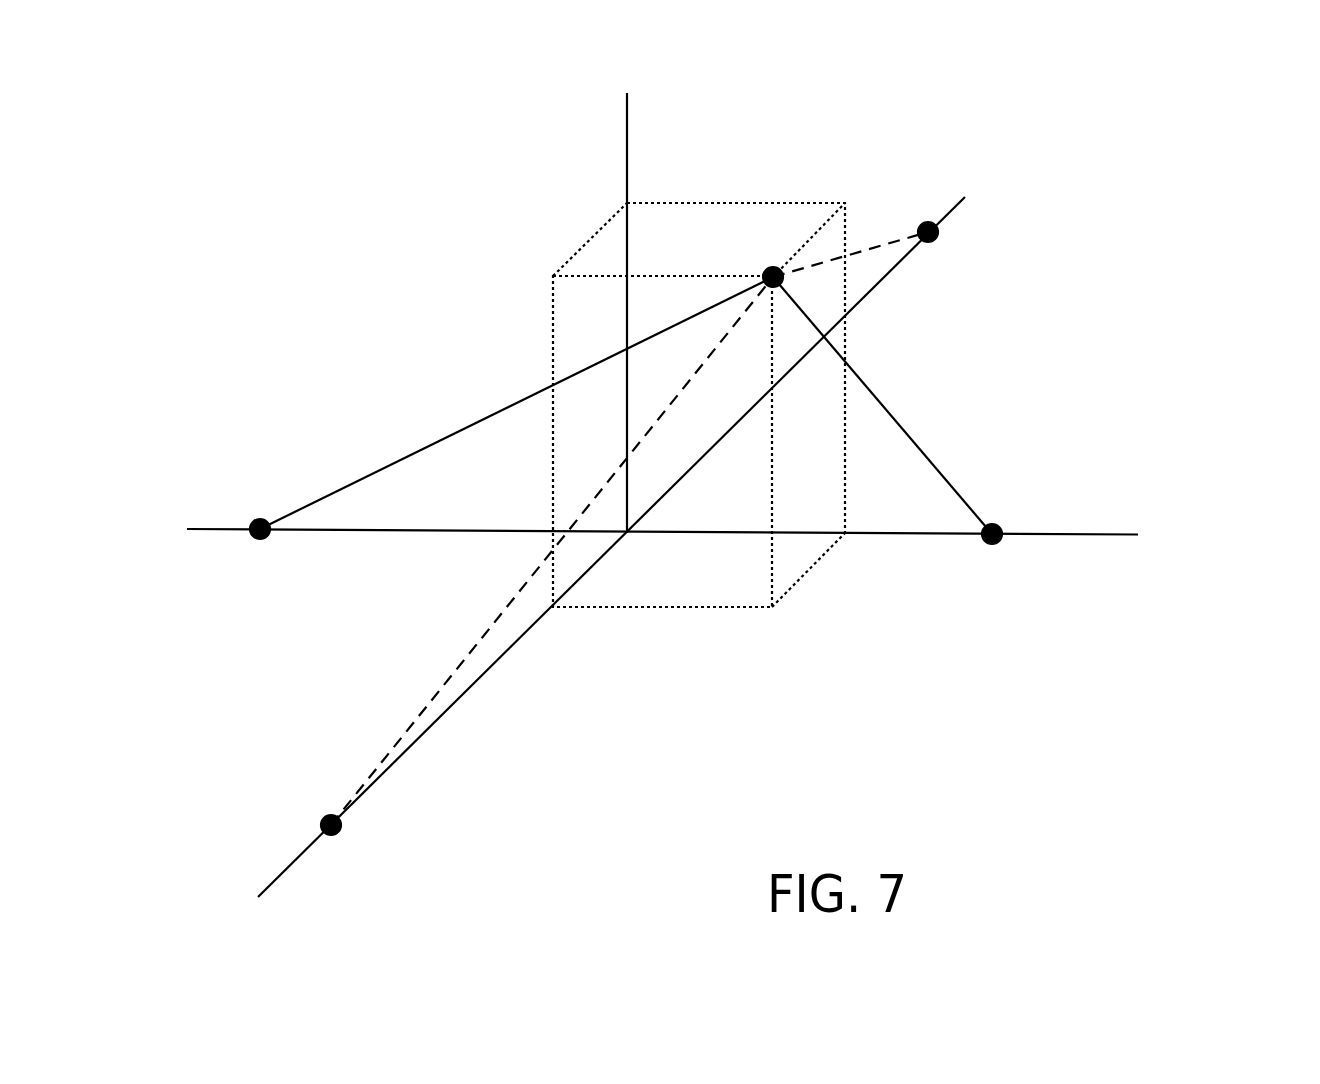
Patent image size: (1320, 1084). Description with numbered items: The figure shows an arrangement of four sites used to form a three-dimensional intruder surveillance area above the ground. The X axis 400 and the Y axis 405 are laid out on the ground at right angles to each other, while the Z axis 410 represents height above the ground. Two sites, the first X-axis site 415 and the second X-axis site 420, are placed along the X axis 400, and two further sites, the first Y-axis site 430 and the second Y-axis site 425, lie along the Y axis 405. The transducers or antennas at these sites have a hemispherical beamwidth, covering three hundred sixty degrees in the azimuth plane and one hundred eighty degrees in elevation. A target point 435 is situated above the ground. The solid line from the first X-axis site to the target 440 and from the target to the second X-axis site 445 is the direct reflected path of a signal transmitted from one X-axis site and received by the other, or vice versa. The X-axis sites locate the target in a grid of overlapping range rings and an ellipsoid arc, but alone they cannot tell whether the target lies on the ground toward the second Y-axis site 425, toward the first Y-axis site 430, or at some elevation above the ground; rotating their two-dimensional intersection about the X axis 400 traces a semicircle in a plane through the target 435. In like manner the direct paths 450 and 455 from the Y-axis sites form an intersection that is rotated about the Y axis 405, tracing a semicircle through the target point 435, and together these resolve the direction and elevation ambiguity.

The X axis 400 is at (1067, 533).
The Y axis 405 is at (283, 870).
The Z axis 410 is at (627, 135).
The site X1 415 is at (258, 520).
The site X2 420 is at (980, 538).
The site Y2 425 is at (928, 243).
The site Y1 430 is at (329, 817).
The target P 435 is at (775, 265).
The solid line from X1 to P 440 is at (477, 418).
The solid line from P to X2 445 is at (925, 455).
The direct path from Y1 450 is at (460, 662).
The direct path from Y2 455 is at (863, 248).